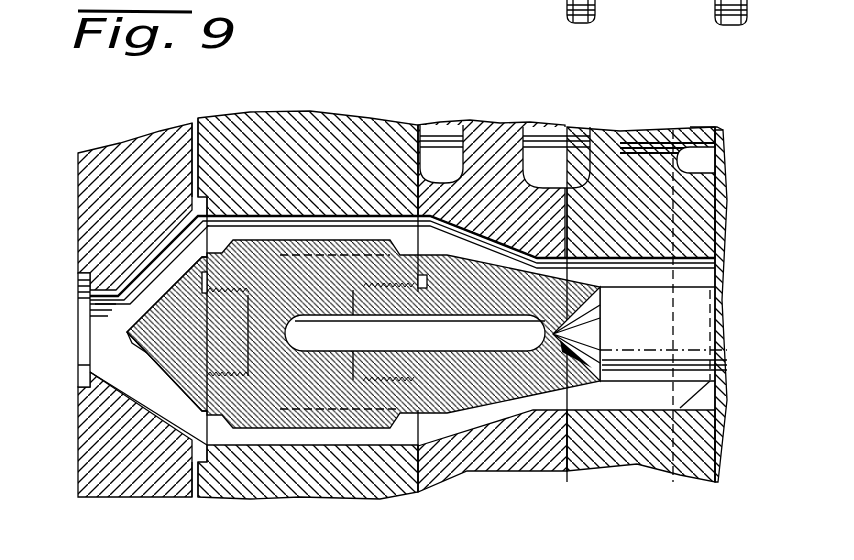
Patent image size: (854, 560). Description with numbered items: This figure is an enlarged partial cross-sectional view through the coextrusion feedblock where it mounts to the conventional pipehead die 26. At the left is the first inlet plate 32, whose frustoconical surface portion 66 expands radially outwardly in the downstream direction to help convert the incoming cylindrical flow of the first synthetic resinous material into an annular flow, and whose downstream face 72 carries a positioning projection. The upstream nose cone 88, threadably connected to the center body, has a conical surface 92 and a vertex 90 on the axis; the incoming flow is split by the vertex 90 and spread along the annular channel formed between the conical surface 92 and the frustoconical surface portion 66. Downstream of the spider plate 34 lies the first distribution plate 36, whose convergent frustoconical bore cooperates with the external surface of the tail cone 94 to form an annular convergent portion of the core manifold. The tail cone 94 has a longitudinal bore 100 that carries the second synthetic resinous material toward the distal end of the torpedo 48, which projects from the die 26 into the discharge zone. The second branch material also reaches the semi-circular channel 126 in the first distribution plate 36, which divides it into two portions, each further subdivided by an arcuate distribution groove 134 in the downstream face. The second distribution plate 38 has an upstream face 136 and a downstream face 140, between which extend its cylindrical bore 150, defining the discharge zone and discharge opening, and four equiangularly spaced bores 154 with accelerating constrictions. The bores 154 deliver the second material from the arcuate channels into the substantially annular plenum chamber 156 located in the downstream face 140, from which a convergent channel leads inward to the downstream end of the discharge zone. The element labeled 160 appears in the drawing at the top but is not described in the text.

The pipehead die 26 is at (726, 246).
The first inlet plate 32 is at (90, 190).
The spider plate 34 is at (247, 126).
The first distribution plate 36 is at (479, 135).
The second distribution plate 38 is at (690, 216).
The torpedo 48 is at (717, 320).
The frustoconical surface portion 66 is at (142, 272).
The downstream face 72 is at (205, 152).
The nose cone 88 is at (158, 349).
The vertex 90 is at (125, 333).
The conical surface 92 is at (105, 425).
The tail cone 94 is at (500, 270).
The longitudinal bore 100 is at (381, 322).
The semi-circular channel 126 is at (434, 142).
The arcuate distribution groove 134 is at (541, 142).
The upstream face 136 is at (575, 126).
The downstream face 140 is at (701, 128).
The cylindrical bore 150 is at (723, 371).
The bores 154 is at (636, 150).
The plenum chamber 156 is at (690, 166).
The fastener 160 is at (714, 10).